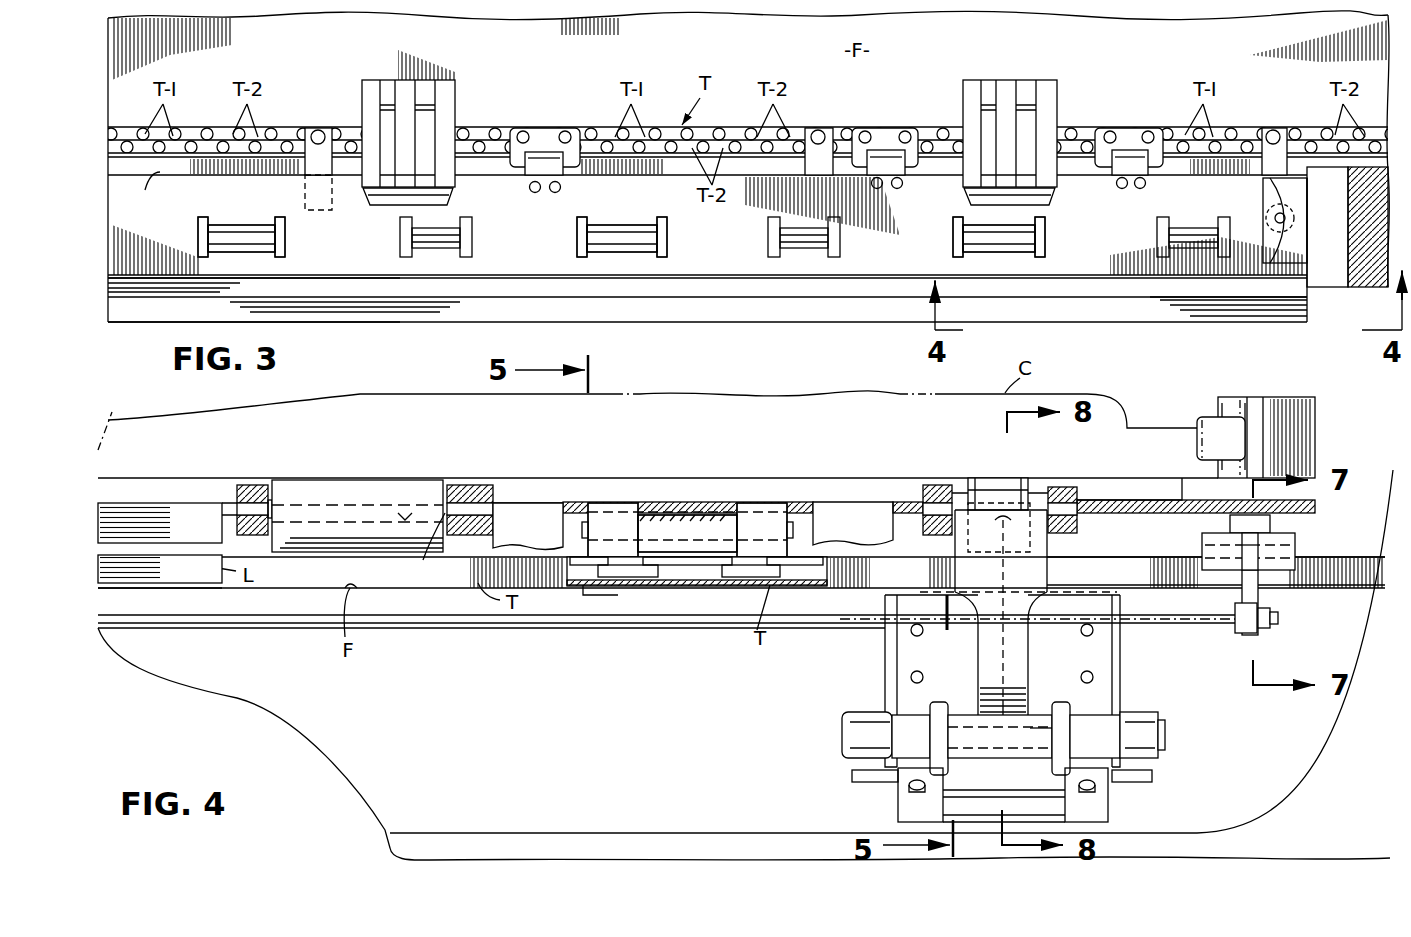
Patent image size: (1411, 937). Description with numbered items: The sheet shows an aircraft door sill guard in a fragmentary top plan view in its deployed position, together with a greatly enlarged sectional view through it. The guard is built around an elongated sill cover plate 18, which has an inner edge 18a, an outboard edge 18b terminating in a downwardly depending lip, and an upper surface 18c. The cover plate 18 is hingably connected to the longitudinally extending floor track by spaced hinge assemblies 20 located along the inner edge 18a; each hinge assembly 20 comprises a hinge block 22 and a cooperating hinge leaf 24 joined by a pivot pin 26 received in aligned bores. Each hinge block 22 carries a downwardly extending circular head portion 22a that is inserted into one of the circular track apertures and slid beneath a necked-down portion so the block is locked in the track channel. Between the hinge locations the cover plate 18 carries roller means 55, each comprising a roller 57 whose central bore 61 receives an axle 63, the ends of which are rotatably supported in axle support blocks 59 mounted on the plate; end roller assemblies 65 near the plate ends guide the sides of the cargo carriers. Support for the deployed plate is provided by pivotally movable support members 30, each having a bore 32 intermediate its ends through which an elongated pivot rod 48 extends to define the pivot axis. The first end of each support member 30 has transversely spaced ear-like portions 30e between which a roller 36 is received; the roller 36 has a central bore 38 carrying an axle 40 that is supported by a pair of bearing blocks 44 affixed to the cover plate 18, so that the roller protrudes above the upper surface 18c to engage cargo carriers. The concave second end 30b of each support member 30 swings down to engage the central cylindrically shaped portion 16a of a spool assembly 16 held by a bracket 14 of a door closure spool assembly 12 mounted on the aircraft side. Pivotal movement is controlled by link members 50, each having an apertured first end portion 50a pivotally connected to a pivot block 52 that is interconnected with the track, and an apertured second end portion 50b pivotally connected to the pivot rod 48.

In FIG. 4, the door closure spool assembly 12 is at (882, 687).
In FIG. 4, the bracket 14 is at (883, 647).
In FIG. 4, the spool assembly 16 is at (840, 748).
In FIG. 4, the central cylindrically shaped portion 16a is at (1040, 705).
In FIG. 3, the sill cover plate 18 is at (723, 290).
In FIG. 4, the sill cover plate 18 is at (514, 500).
In FIG. 3, the inner edge 18a is at (140, 192).
In FIG. 3, the outer edge 18b is at (165, 328).
In FIG. 4, the outer edge 18b is at (185, 585).
In FIG. 3, the upper surface 18c is at (867, 255).
In FIG. 4, the upper surface 18c is at (125, 503).
In FIG. 3, the hinge assembly 20 is at (548, 128).
In FIG. 4, the hinge assembly 20 is at (706, 515).
In FIG. 3, the hinge block 22 is at (520, 128).
In FIG. 4, the hinge block 22 is at (606, 525).
In FIG. 4, the head portion 22a is at (745, 578).
In FIG. 3, the hinge leaf 24 is at (545, 166).
In FIG. 4, the hinge leaf 24 is at (662, 525).
In FIG. 4, the pivot pin 26 is at (560, 525).
In FIG. 4, the support member 30 is at (976, 640).
In FIG. 4, the second end 30b is at (1007, 750).
In FIG. 4, the ear-like portions 30e is at (957, 535).
In FIG. 4, the bore 32 is at (1008, 630).
In FIG. 3, the roller 36 is at (431, 258).
In FIG. 4, the roller 36 is at (996, 490).
In FIG. 4, the central bore 38 is at (1000, 542).
In FIG. 4, the axle 40 is at (1055, 510).
In FIG. 3, the bearing blocks 44 is at (398, 237).
In FIG. 4, the bearing blocks 44 is at (937, 485).
In FIG. 4, the pivot rod 48 is at (262, 625).
In FIG. 4, the link member 50 is at (1258, 598).
In FIG. 4, the first end portion 50a is at (1250, 632).
In FIG. 4, the second end portion 50b is at (1245, 545).
In FIG. 3, the pivot block 52 is at (318, 128).
In FIG. 4, the pivot block 52 is at (1292, 538).
In FIG. 3, the roller means 55 is at (196, 236).
In FIG. 4, the roller means 55 is at (256, 485).
In FIG. 3, the roller 57 is at (242, 246).
In FIG. 4, the roller 57 is at (350, 497).
In FIG. 3, the axle support blocks 59 is at (275, 216).
In FIG. 4, the axle support blocks 59 is at (240, 485).
In FIG. 4, the central bore 61 is at (398, 505).
In FIG. 4, the axle 63 is at (428, 551).
In FIG. 3, the end roller assemblies 65 is at (1310, 202).
In FIG. 4, the end roller assemblies 65 is at (1310, 410).